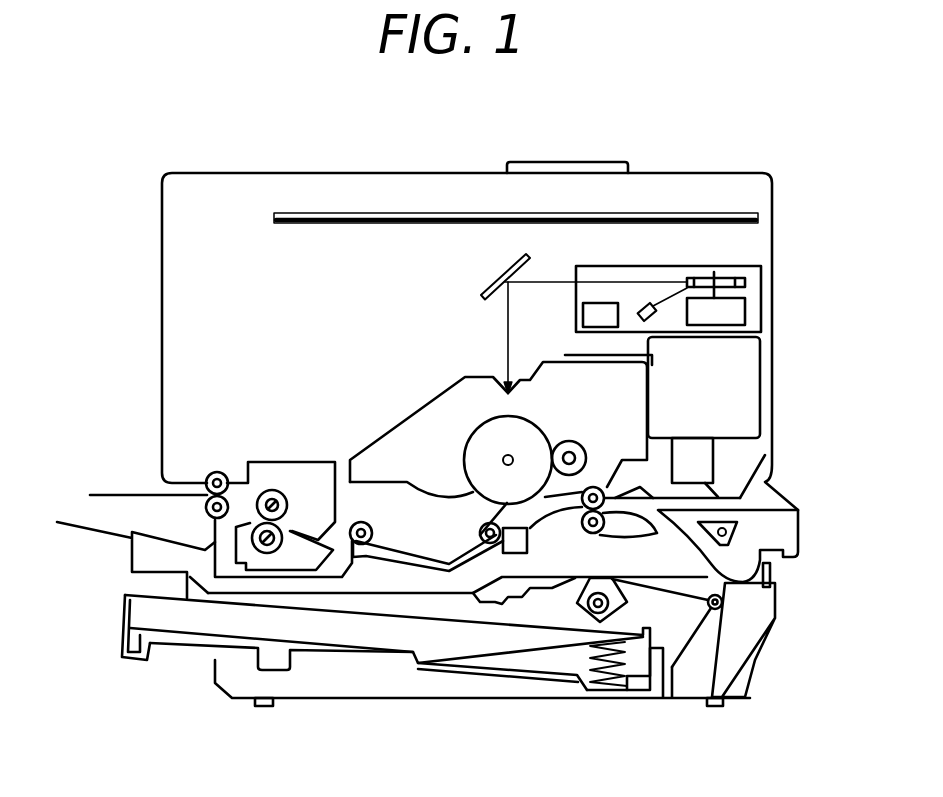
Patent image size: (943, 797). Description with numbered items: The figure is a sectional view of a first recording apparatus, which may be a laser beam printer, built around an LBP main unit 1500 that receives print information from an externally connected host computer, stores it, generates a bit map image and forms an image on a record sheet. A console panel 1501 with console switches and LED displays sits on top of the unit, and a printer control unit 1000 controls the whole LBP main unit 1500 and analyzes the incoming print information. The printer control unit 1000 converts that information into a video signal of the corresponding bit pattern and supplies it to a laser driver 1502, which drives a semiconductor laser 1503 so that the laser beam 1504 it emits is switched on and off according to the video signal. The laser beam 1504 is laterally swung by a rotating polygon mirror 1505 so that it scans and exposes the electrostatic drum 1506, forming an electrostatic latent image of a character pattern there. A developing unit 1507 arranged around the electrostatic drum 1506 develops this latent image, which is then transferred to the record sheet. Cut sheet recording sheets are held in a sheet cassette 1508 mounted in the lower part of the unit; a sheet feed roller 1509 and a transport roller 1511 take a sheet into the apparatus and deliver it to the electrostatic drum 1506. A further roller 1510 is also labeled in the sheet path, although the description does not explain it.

The printer control unit 1000 is at (760, 210).
The LBP main unit 1500 is at (723, 172).
The console panel 1501 is at (585, 160).
The laser driver 1502 is at (583, 313).
The semiconductor laser 1503 is at (652, 318).
The laser beam 1504 is at (633, 280).
The rotating polygon mirror 1505 is at (745, 283).
The electrostatic drum 1506 is at (478, 427).
The developing unit 1507 is at (383, 447).
The sheet cassette 1508 is at (123, 632).
The sheet feed roller 1509 is at (577, 603).
The roller 1510 is at (712, 610).
The transport roller 1511 is at (585, 550).